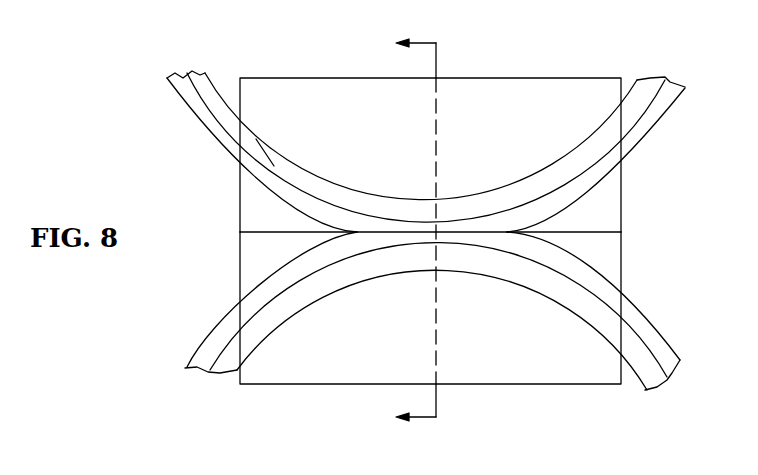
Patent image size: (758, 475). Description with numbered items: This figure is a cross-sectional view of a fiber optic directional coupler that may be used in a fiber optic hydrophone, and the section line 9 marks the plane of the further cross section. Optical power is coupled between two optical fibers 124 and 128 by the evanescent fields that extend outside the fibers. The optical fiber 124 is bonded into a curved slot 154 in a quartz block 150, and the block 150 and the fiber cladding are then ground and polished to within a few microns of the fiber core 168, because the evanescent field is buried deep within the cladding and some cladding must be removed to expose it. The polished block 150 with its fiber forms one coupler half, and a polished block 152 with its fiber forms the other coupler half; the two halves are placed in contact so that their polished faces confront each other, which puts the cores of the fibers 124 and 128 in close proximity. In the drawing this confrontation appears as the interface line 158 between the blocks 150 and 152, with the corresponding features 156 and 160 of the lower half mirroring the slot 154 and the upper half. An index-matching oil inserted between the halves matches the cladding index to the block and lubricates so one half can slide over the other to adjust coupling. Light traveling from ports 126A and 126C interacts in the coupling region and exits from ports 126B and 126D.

The section line 9 is at (401, 232).
The optical fiber 124 is at (399, 243).
The port 126A is at (174, 59).
The port 126B is at (684, 61).
The port 126C is at (198, 395).
The port 126D is at (670, 405).
The optical fiber 128 is at (415, 353).
The quartz block 150 is at (526, 78).
The polished block 152 is at (517, 385).
The curved slot 154 is at (255, 138).
The lower strap layer 156 is at (608, 330).
The parting line 158 is at (267, 233).
The parting line 160 is at (593, 232).
The core 168 is at (274, 166).